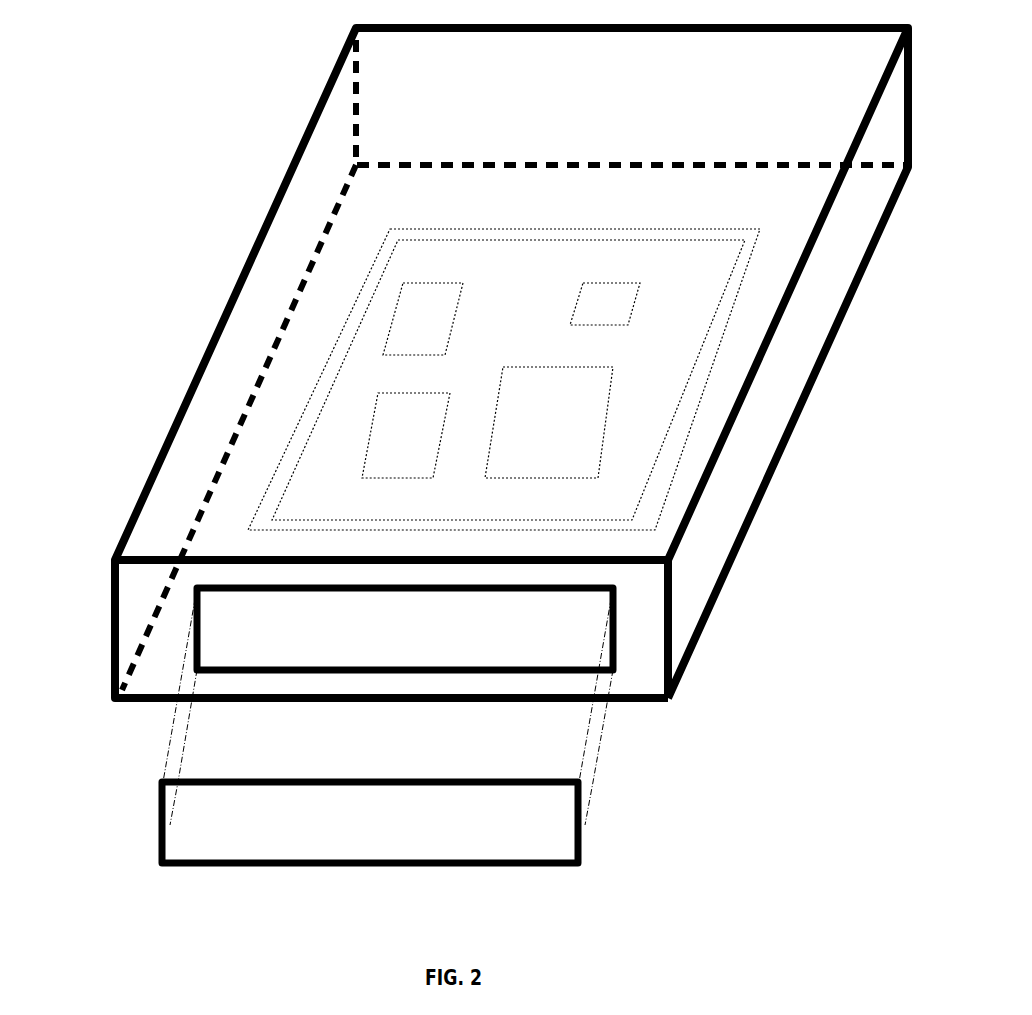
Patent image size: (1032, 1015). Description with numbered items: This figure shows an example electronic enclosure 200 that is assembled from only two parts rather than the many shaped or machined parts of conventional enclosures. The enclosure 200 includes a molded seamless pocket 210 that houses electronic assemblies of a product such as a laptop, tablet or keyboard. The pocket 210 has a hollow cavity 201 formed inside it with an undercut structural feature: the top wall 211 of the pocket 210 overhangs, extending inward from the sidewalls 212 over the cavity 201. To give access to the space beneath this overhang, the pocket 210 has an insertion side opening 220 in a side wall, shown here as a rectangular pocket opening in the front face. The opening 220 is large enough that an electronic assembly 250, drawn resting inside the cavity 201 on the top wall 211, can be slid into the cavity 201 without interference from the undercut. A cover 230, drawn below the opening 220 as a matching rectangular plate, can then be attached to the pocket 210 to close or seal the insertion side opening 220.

The electronic enclosure 200 is at (198, 190).
The cavity 201 is at (266, 584).
The pocket 210 is at (227, 305).
The top wall 211 is at (227, 527).
The sidewalls 212 is at (727, 508).
The insertion side opening 220 is at (590, 647).
The cover 230 is at (550, 810).
The electronic assembly 250 is at (515, 356).